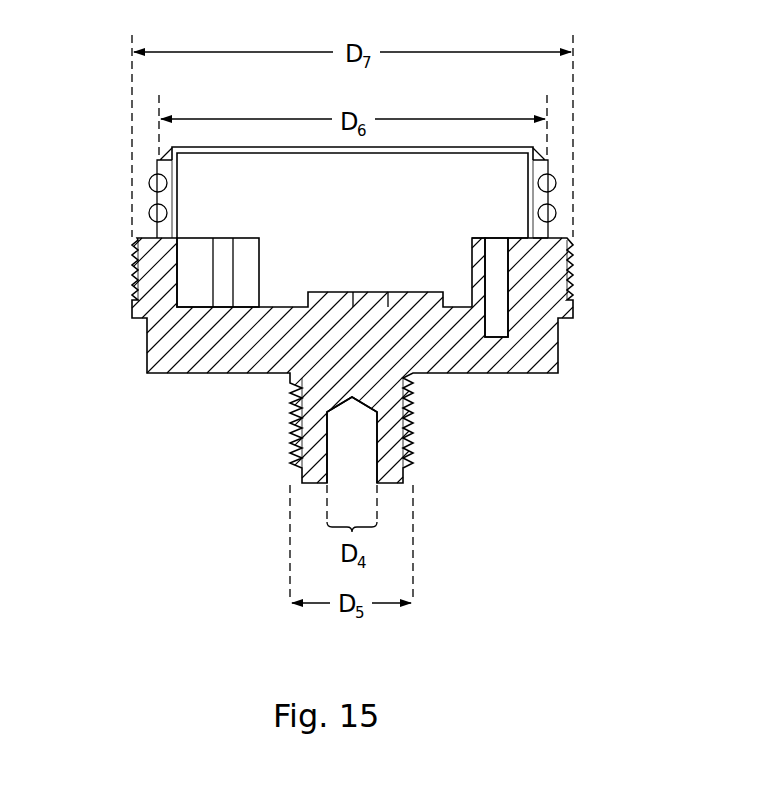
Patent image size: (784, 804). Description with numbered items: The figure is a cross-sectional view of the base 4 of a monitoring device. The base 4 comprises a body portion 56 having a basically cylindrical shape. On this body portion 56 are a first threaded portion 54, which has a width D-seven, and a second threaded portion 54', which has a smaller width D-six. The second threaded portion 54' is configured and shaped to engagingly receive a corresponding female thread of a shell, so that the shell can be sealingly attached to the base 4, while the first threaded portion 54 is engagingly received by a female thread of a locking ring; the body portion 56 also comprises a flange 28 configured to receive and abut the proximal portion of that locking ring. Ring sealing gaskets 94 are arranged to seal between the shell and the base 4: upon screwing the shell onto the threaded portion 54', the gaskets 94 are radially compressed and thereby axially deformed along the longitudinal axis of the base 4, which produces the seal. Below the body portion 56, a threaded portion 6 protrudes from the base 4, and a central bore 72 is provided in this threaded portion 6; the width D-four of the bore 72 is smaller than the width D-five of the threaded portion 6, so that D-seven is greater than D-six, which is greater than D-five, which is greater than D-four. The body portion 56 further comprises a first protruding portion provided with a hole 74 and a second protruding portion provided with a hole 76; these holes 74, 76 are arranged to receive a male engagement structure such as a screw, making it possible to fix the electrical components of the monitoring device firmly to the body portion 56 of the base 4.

The base 4 is at (676, 284).
The threaded portion 6 is at (410, 448).
The flange 28 is at (551, 236).
The first threaded portion 54 is at (412, 266).
The second threaded portion 54' is at (408, 172).
The body portion 56 is at (131, 350).
The central bore 72 is at (345, 428).
The hole 74 is at (220, 255).
The hole 76 is at (495, 252).
The ring sealing gaskets 94 is at (556, 213).